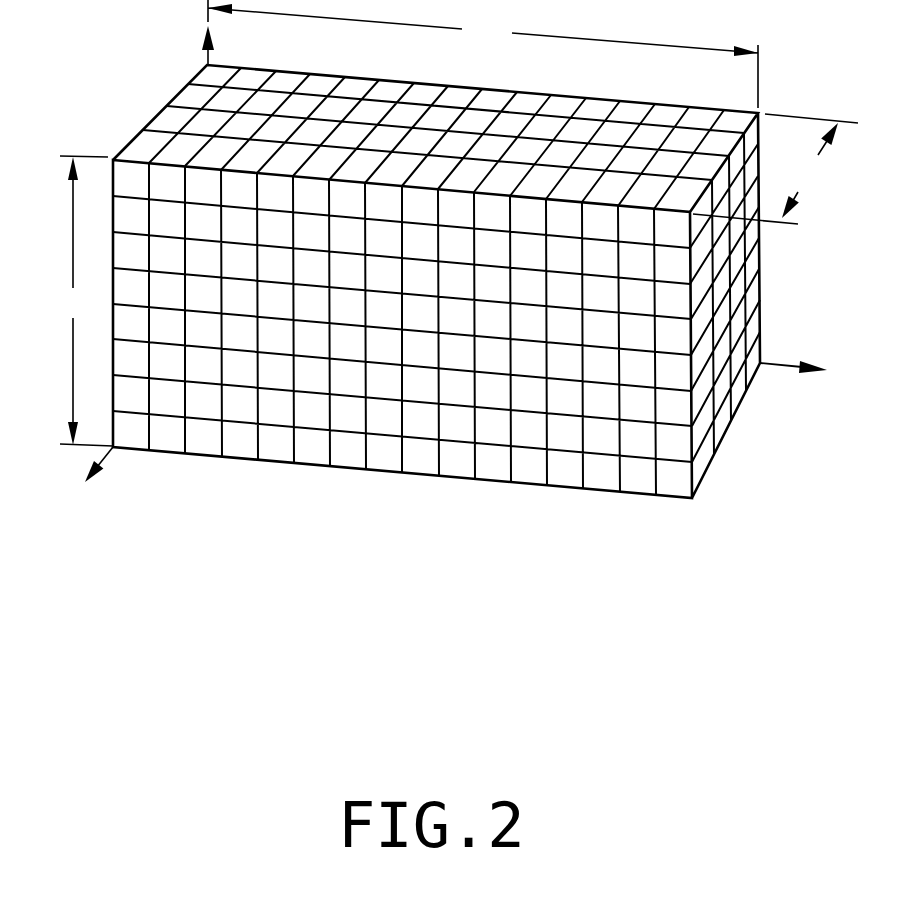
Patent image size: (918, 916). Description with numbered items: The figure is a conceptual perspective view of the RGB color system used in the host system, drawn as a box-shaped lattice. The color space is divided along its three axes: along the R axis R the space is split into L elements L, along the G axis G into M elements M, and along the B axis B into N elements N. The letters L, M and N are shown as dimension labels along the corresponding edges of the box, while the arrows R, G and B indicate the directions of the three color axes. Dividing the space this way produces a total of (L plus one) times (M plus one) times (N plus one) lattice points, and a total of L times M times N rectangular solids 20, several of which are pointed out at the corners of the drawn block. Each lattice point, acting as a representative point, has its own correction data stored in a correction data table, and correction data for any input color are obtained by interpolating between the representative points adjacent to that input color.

The rectangular solid 20 is at (133, 153).
The number of elements along the R axis L is at (483, 54).
The number of elements along the G axis M is at (86, 301).
The number of elements along the B axis N is at (775, 169).
The G axis G is at (189, 45).
The B axis B is at (85, 482).
The R axis R is at (793, 350).